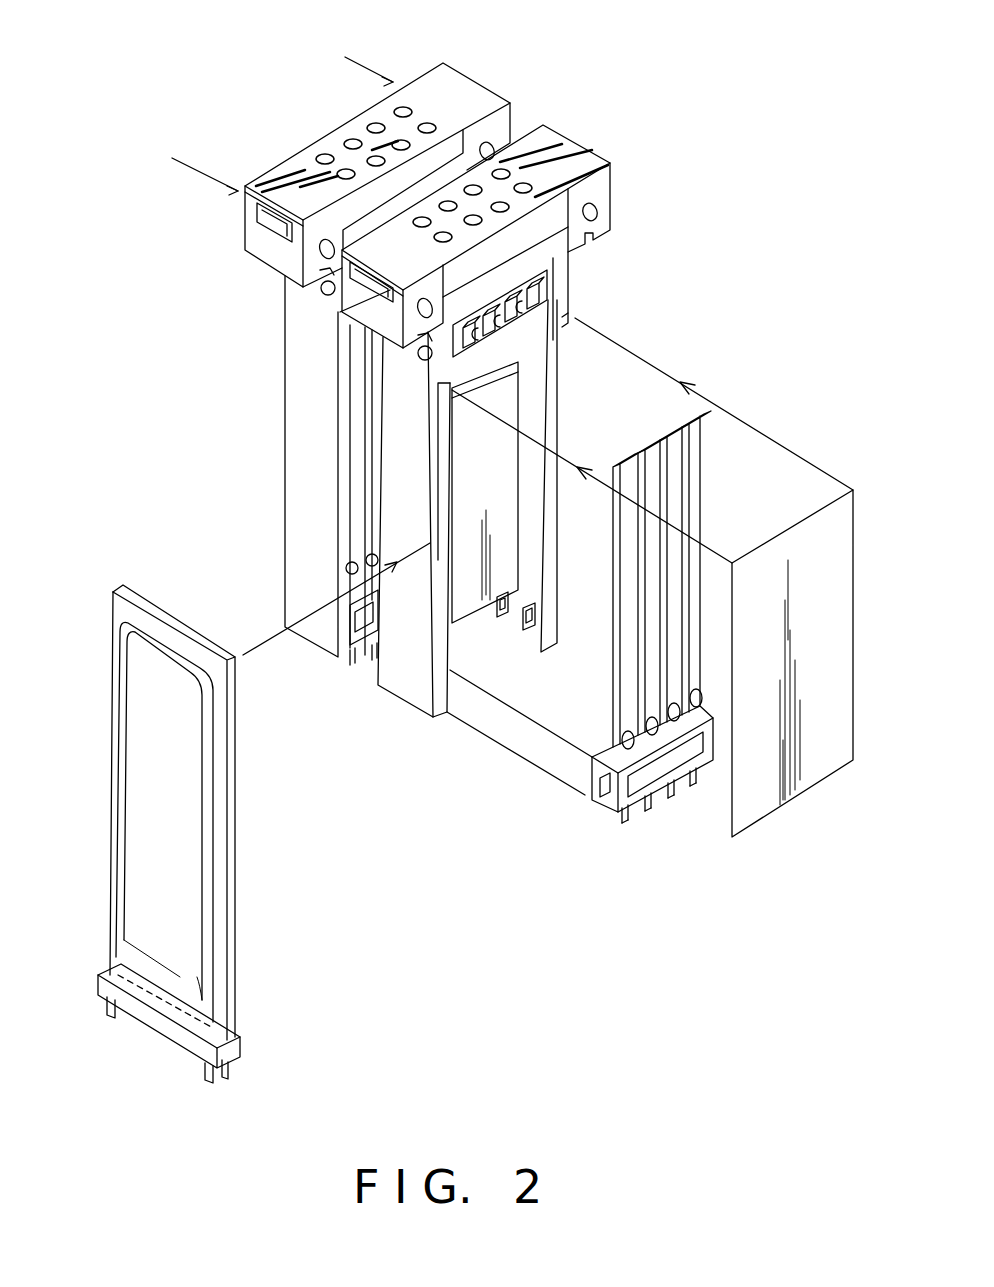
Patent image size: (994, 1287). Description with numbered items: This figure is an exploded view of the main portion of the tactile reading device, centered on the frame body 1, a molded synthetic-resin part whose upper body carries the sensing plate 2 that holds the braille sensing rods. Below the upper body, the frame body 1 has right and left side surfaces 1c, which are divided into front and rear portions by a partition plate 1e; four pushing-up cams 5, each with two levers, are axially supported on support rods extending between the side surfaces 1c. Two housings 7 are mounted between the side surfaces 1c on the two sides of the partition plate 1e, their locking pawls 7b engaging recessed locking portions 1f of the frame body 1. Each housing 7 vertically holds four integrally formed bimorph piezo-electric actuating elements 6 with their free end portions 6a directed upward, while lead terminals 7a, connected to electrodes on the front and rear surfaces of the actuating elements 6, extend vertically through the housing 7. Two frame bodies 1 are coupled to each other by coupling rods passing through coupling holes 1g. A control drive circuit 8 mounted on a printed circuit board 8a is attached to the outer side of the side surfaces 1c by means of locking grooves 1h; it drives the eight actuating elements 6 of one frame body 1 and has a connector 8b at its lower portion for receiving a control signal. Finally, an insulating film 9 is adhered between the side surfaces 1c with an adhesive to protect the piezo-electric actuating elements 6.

The frame body 1 is at (454, 503).
The side surfaces 1c is at (567, 420).
The partition plate 1e is at (470, 600).
The recessed locking portions 1f is at (525, 630).
The coupling holes 1g is at (463, 88).
The locking grooves 1h is at (592, 242).
The sensing plate 2 is at (460, 222).
The pushing-up cams 5 is at (530, 300).
The bimorph piezo-electric actuating elements 6 is at (689, 579).
The free end portions 6a is at (693, 450).
The housings 7 is at (624, 780).
The lead terminals 7a is at (695, 790).
The locking pawls 7b is at (608, 812).
The control drive circuits 8 is at (199, 809).
The printed circuit board 8a is at (199, 1023).
The connector 8b is at (98, 996).
The insulating film 9 is at (795, 800).